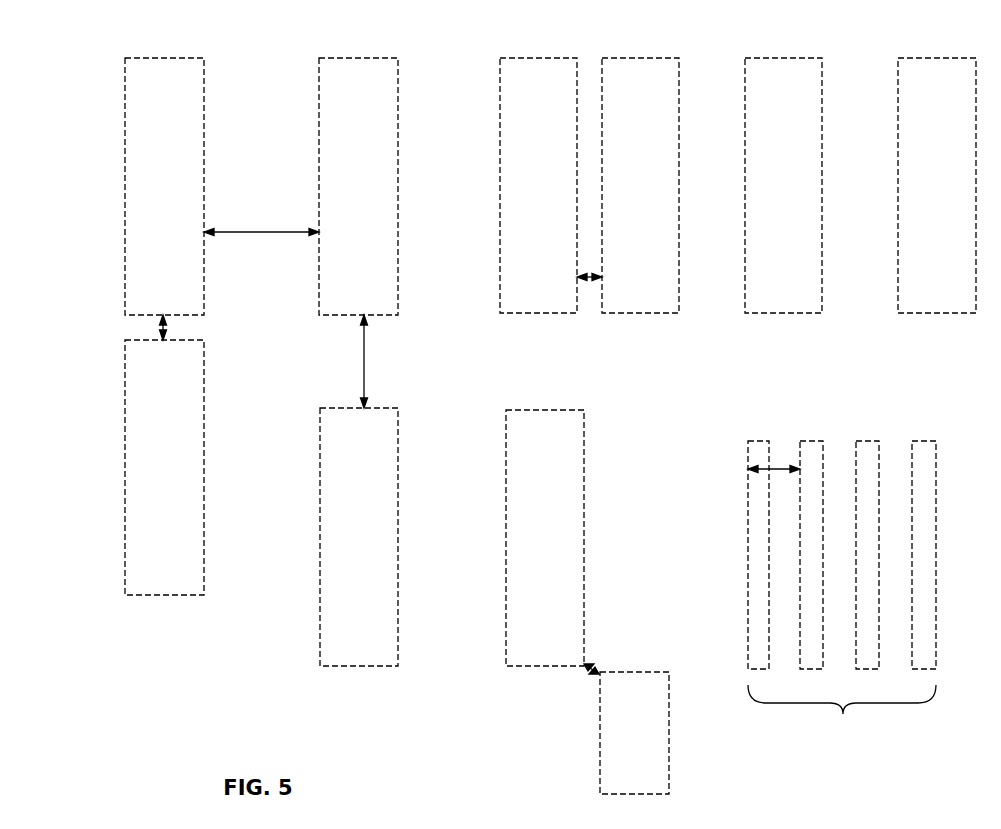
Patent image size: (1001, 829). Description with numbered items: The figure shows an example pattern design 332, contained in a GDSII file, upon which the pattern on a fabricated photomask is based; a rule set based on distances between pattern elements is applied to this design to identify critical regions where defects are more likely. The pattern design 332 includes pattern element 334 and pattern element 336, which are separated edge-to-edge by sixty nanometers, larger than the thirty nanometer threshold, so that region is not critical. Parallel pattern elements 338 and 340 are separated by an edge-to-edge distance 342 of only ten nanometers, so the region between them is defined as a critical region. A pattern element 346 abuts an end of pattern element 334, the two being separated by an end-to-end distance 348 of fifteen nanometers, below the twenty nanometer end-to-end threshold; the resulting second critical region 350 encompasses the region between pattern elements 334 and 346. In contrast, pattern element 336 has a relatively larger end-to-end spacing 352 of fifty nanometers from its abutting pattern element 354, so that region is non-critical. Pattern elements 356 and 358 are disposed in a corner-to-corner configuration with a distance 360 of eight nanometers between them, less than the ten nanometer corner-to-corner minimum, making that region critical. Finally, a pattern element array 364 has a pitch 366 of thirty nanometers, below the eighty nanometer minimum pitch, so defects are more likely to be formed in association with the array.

The pattern design 332 is at (86, 50).
The pattern element 334 is at (179, 58).
The pattern element 336 is at (352, 58).
The pattern element 338 is at (547, 58).
The pattern element 340 is at (642, 58).
The edge-to-edge distance 342 is at (588, 281).
The pattern element 346 is at (170, 595).
The end-to-end distance 348 is at (167, 326).
The second critical region 350 is at (247, 232).
The end-to-end spacing 352 is at (366, 358).
The pattern element 354 is at (363, 666).
The pattern element 356 is at (530, 410).
The pattern element 358 is at (600, 741).
The corner-to-corner distance 360 is at (600, 658).
The pattern element array 364 is at (842, 589).
The pitch 366 is at (782, 465).